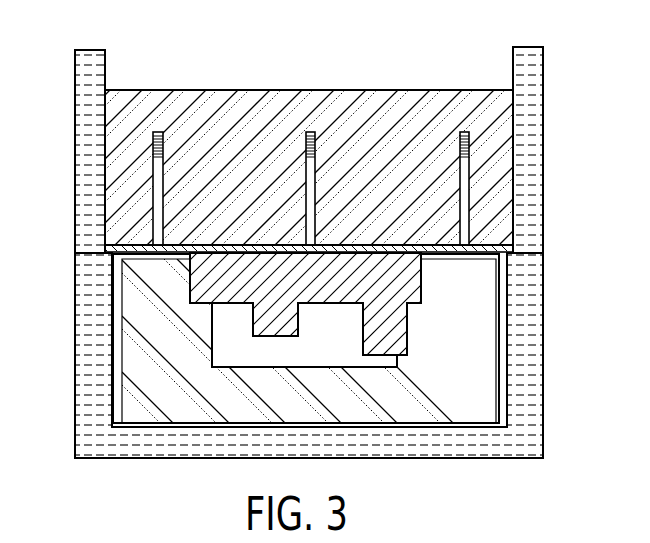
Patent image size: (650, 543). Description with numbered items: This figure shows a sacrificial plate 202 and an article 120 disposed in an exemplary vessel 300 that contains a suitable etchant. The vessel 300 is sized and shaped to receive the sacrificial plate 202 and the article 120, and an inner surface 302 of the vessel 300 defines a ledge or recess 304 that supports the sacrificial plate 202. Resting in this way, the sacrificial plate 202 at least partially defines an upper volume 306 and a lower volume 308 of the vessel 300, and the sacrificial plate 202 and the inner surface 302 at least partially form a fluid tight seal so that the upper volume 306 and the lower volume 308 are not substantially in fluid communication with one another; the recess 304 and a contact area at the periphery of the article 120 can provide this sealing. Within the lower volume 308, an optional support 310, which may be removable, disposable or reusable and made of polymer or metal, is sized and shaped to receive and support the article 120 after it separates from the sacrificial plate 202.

The vessel 300 is at (548, 198).
The inner surface 302 is at (512, 75).
The ledge or recess 304 is at (534, 252).
The upper volume 306 is at (122, 68).
The lower volume 308 is at (117, 312).
The support 310 is at (235, 408).
The sacrificial plate 202 is at (400, 240).
The article 120 is at (232, 292).